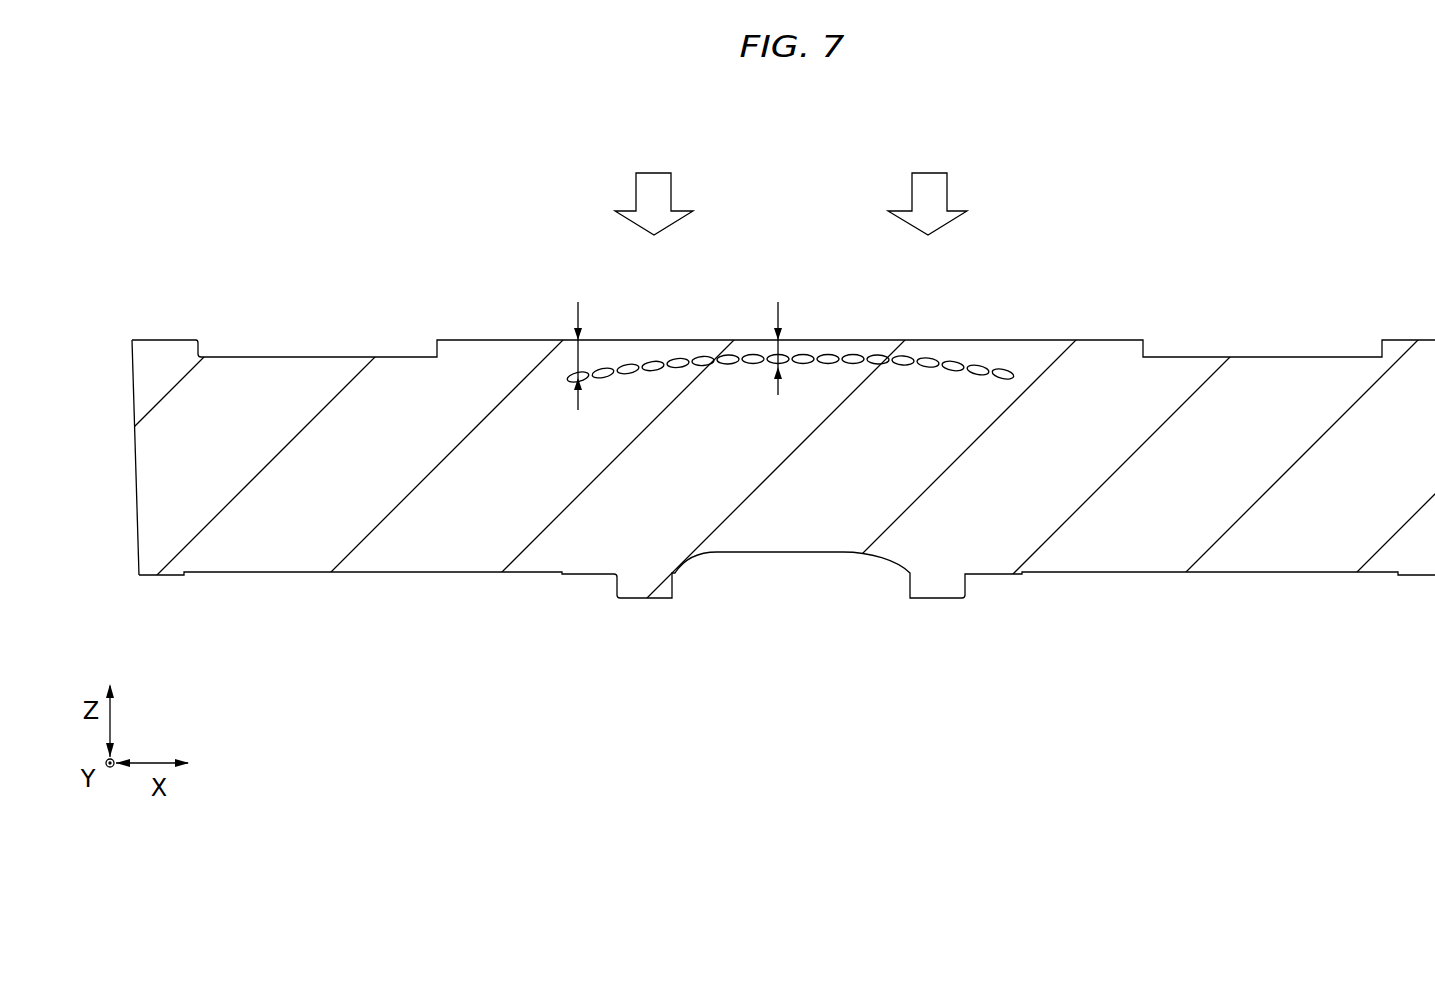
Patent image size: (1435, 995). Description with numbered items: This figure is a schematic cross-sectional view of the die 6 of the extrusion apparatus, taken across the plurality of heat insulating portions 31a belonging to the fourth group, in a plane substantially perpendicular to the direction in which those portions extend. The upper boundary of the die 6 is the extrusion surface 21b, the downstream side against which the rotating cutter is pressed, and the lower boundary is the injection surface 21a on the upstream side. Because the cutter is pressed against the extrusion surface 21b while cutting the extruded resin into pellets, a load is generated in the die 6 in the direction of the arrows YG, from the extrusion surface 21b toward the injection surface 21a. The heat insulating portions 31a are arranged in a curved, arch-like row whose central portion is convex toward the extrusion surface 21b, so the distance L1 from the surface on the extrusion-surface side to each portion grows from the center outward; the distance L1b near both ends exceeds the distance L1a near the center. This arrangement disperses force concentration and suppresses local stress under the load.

The die 6 is at (717, 497).
The injection surface 21a is at (1118, 580).
The extrusion surface 21b is at (1100, 335).
The heat insulating portion 31a is at (620, 372).
The distance L1 is at (672, 331).
The distance at the position closer to the center L1a is at (777, 357).
The distance at the position closer to both sides L1b is at (577, 357).
The arrows indicating load direction YG is at (653, 185).